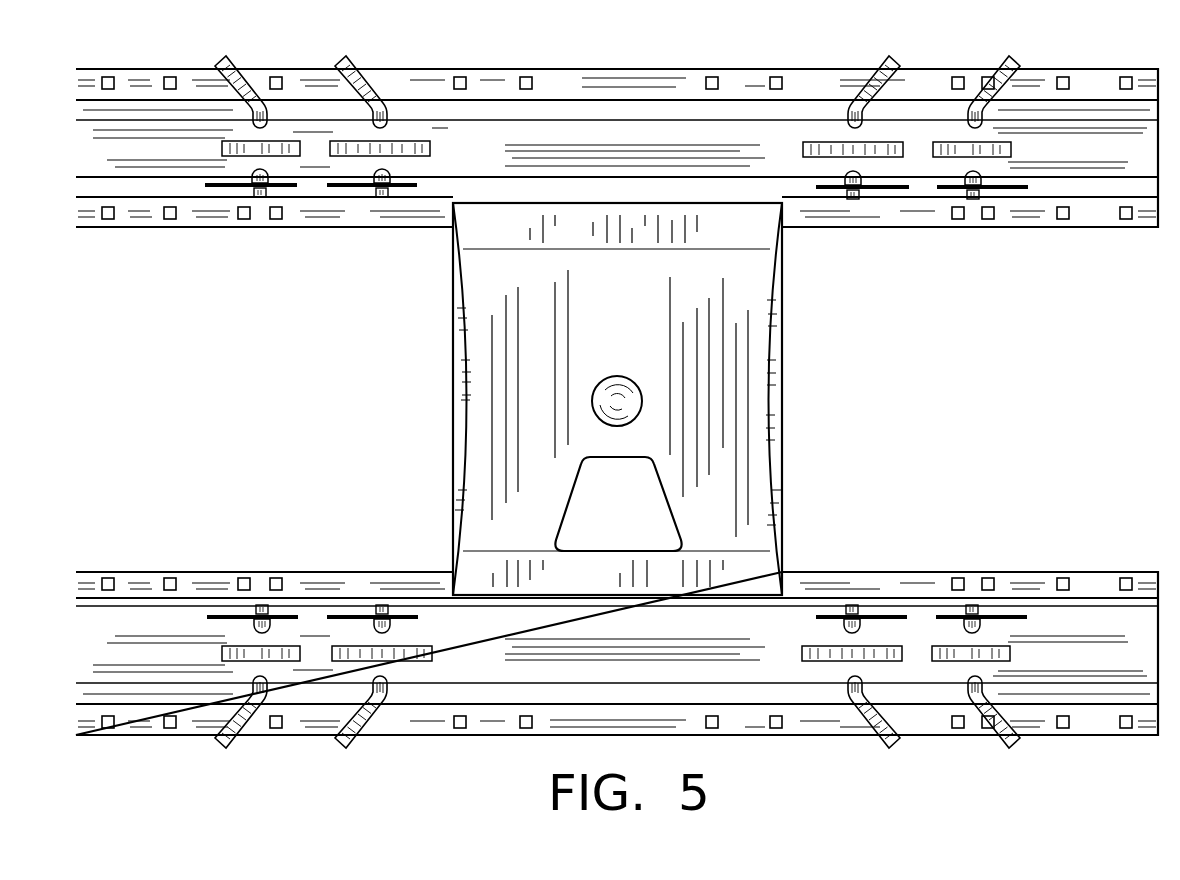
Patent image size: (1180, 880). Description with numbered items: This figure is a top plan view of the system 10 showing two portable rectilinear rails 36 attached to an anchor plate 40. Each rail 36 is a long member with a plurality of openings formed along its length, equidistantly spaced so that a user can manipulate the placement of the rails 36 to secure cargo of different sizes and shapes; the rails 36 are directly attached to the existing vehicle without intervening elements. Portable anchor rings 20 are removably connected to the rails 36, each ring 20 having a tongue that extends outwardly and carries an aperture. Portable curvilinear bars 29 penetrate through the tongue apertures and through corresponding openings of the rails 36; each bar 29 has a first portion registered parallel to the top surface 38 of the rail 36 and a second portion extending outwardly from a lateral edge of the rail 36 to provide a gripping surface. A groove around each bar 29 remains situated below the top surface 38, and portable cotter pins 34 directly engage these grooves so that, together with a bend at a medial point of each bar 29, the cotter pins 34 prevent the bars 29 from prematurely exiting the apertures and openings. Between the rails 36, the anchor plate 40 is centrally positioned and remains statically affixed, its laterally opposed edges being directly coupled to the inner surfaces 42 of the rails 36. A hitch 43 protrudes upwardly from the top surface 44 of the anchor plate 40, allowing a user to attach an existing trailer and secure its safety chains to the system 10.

The system 10 is at (185, 421).
The portable anchor ring 20 is at (298, 151).
The portable curvilinear bar 29 is at (243, 80).
The portable cotter pin 34 is at (218, 189).
The portable rectilinear rail 36 is at (668, 76).
The top surface 38 is at (752, 122).
The anchor plate 40 is at (772, 408).
The inner surface 42 is at (424, 226).
The hitch 43 is at (620, 401).
The top surface 44 is at (725, 496).